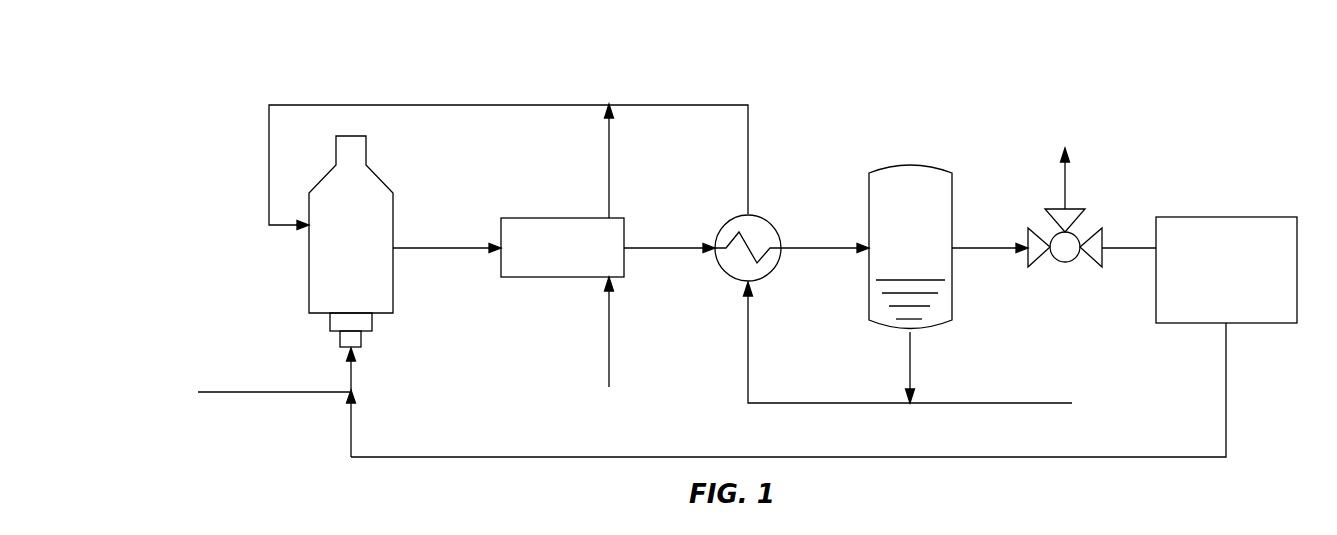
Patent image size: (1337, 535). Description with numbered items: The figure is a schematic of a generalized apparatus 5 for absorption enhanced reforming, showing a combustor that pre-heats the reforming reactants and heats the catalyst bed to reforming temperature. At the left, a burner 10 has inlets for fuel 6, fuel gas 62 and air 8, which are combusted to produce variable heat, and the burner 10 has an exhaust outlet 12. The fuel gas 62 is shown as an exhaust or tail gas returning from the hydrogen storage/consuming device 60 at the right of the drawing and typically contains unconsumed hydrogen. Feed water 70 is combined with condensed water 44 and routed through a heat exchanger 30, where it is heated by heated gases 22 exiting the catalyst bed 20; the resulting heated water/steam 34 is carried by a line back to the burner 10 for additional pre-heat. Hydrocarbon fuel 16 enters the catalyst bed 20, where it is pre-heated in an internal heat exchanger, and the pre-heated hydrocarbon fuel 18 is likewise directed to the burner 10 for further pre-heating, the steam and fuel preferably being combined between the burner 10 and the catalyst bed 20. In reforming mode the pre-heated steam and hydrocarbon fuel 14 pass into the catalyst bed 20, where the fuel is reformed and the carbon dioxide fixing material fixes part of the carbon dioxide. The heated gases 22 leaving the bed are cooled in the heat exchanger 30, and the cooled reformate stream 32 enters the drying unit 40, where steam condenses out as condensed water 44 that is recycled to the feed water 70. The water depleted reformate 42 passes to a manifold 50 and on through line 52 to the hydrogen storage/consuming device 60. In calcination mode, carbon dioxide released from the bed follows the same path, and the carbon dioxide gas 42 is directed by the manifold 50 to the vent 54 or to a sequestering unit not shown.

The apparatus 5 is at (274, 470).
The fuel 6 is at (173, 404).
The air 8 is at (387, 323).
The burner 10 is at (336, 260).
The exhaust outlet 12 is at (351, 136).
The pre-heated steam and hydrocarbon fuel 14 is at (437, 245).
The hydrocarbon fuel 16 is at (590, 417).
The pre-heated hydrocarbon fuel 18 is at (609, 171).
The catalyst bed 20 is at (547, 260).
The heated gases 22 is at (662, 246).
The heat exchanger 30 is at (729, 277).
The reformate stream 32 is at (822, 246).
The heated water/steam 34 is at (703, 105).
The drying unit 40 is at (895, 236).
The water depleted reformate 42 is at (986, 246).
The condensed water 44 is at (912, 363).
The manifold 50 is at (1067, 262).
The control line 52 is at (1128, 246).
The vent 54 is at (1050, 142).
The hydrogen storage/consuming device 60 is at (1210, 282).
The fuel gas 62 is at (1226, 406).
The feed water 70 is at (1075, 415).